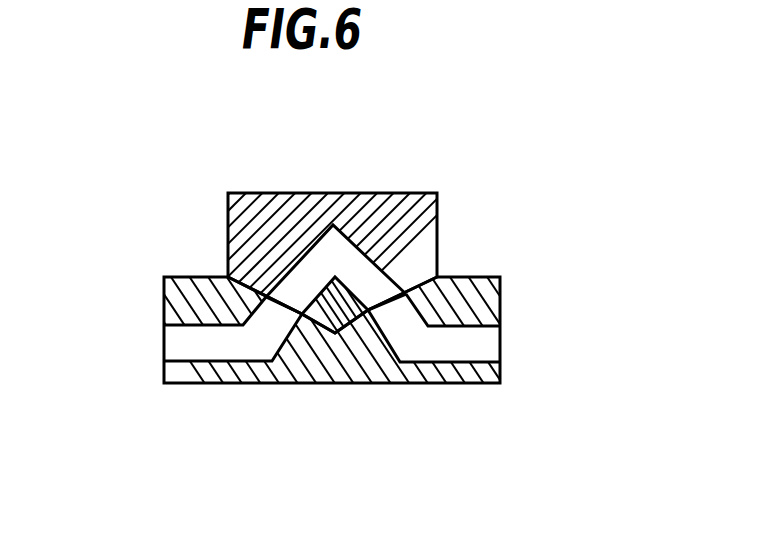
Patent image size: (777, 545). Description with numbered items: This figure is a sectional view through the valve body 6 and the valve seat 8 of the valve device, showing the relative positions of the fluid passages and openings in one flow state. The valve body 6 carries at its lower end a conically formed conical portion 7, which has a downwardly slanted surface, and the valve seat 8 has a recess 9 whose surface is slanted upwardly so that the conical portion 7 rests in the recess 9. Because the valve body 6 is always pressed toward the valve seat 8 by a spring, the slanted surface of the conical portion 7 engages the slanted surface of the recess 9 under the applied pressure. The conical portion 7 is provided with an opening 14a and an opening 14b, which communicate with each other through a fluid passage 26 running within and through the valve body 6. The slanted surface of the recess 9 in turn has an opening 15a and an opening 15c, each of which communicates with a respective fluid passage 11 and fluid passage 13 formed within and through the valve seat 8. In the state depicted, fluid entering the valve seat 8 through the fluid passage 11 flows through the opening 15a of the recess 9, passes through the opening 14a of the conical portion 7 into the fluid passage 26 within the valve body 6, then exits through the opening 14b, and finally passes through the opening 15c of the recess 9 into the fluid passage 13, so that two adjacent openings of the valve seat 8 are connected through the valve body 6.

The valve body 6 is at (289, 213).
The conical portion 7 is at (243, 270).
The valve seat 8 is at (333, 370).
The recess 9 is at (355, 335).
The fluid passage 11 is at (168, 340).
The fluid passage 13 is at (483, 347).
The opening 14a is at (273, 300).
The opening 14b is at (387, 302).
The opening 15a is at (275, 310).
The opening 15c is at (393, 297).
The fluid passage 26 is at (337, 232).